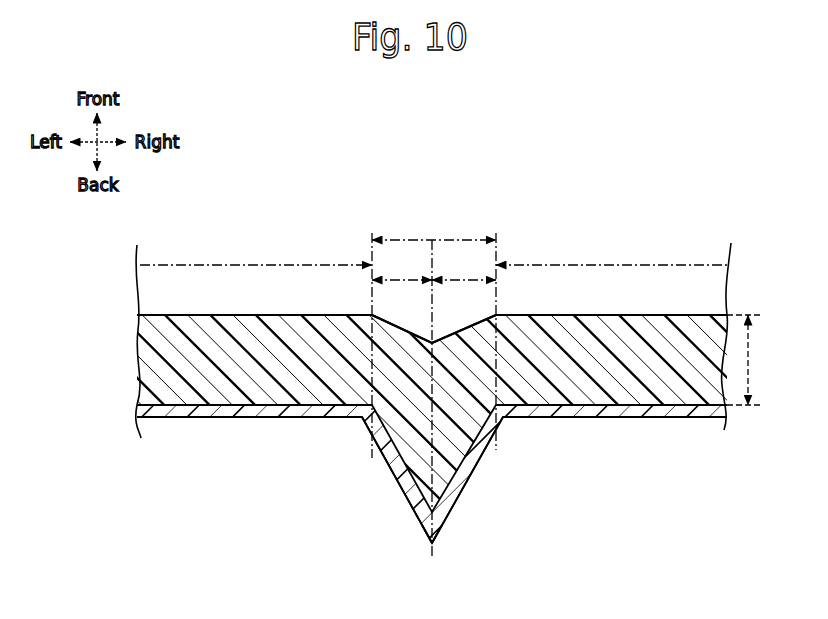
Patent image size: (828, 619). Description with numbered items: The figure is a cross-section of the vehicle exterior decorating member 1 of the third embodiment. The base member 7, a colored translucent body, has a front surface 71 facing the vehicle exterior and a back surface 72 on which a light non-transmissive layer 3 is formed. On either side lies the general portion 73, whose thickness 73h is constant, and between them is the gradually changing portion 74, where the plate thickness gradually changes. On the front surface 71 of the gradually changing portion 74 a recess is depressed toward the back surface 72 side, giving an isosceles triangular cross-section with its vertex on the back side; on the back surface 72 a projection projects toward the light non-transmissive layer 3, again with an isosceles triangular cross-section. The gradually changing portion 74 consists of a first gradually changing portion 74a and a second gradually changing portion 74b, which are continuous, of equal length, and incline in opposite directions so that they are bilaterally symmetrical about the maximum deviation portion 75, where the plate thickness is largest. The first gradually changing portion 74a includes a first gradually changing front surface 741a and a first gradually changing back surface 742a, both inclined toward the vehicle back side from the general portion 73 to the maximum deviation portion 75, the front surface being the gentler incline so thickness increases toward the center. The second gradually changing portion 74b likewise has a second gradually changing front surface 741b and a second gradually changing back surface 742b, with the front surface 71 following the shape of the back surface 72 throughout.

The vehicle exterior decorating member 1 is at (684, 162).
The light non-transmissive layer 3 is at (138, 411).
The base member 7 is at (147, 351).
The front surface 71 is at (175, 313).
The back surface 72 is at (180, 416).
The general portion 73 is at (218, 263).
The thickness of general portion 73h is at (748, 366).
The gradually changing portion 74 is at (423, 240).
The first gradually changing portion 74a is at (400, 279).
The second gradually changing portion 74b is at (465, 279).
The first gradually changing front surface 741a is at (385, 316).
The second gradually changing front surface 741b is at (476, 316).
The first gradually changing back surface 742a is at (407, 477).
The second gradually changing back surface 742b is at (458, 481).
The maximum deviation portion 75 is at (432, 514).